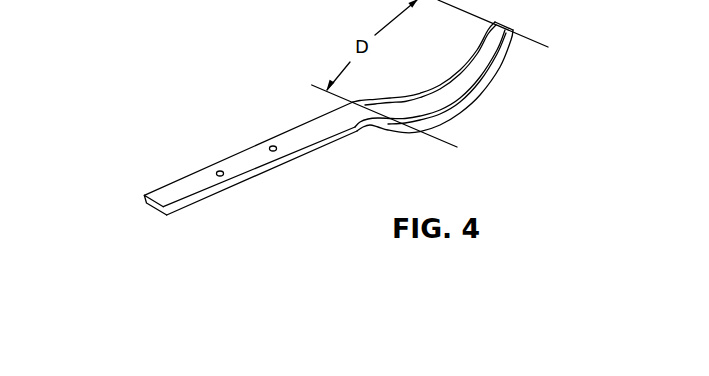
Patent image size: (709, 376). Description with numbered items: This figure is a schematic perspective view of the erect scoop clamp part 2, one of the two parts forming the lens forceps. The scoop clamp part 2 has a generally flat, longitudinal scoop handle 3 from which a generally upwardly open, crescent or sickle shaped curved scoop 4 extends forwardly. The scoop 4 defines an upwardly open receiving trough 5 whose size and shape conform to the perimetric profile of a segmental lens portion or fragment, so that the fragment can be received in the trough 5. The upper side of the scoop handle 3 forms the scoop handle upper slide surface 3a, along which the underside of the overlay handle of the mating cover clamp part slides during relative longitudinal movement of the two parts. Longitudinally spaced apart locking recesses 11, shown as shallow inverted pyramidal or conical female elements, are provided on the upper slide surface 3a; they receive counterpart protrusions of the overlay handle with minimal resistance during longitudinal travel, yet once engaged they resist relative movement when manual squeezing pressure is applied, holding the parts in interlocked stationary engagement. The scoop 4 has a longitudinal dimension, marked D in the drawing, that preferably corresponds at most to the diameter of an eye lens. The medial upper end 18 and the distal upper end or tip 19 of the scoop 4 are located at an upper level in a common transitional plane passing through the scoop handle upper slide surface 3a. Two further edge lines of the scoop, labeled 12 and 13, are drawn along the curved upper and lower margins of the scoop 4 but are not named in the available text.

The scoop clamp part 2 is at (221, 155).
The scoop handle 3 is at (181, 178).
The scoop handle upper slide surface 3a is at (145, 204).
The scoop 4 is at (396, 131).
The receiving trough 5 is at (436, 101).
The recesses 11 is at (272, 153).
The upper edge 12 is at (447, 78).
The lower edge 13 is at (473, 93).
The medial upper end 18 is at (368, 111).
The tip 19 is at (498, 24).